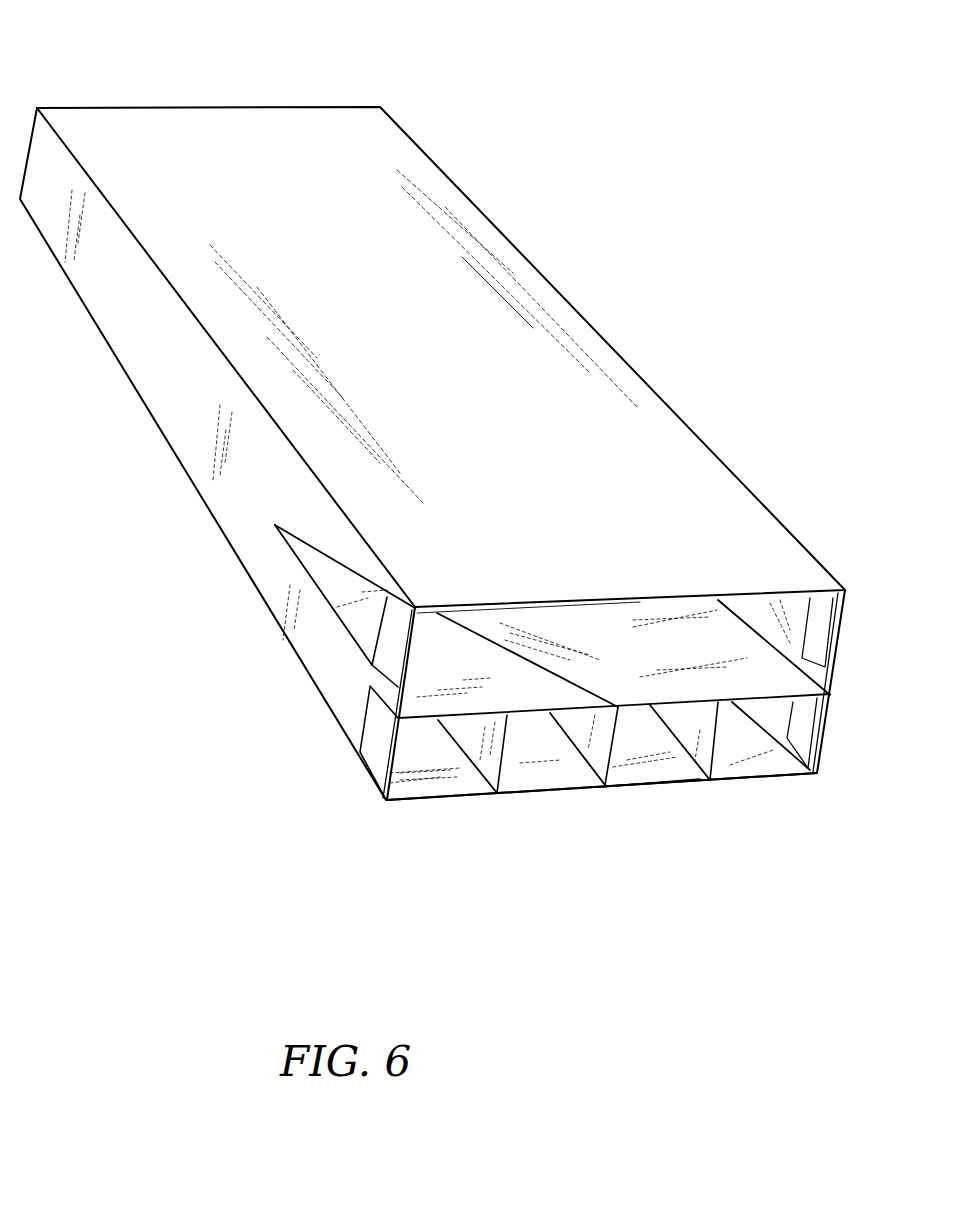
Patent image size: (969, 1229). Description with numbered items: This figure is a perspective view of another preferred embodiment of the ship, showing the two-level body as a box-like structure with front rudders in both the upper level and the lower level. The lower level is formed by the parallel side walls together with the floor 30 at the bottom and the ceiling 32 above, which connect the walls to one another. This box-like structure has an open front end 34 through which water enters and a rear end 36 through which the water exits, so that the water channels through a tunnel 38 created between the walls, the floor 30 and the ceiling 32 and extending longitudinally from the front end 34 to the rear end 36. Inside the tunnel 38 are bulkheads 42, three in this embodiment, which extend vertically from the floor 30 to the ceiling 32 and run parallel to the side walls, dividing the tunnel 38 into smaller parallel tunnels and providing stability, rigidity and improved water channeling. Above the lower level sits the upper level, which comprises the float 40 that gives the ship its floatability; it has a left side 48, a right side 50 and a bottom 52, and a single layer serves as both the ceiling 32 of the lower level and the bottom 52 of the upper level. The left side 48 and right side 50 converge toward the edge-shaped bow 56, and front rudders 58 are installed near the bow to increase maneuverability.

The floor 30 is at (643, 783).
The ceiling 32 is at (797, 700).
The front end 34 is at (545, 833).
The rear end 36 is at (203, 83).
The tunnel 38 is at (512, 770).
The float 40 is at (255, 505).
The bulkhead 42 is at (463, 746).
The left side of the upper level 48 is at (712, 438).
The right side of the upper level 50 is at (205, 388).
The bottom of the upper level 52 is at (770, 685).
The edge-shaped bow 56 is at (647, 602).
The front rudder 58 is at (392, 657).